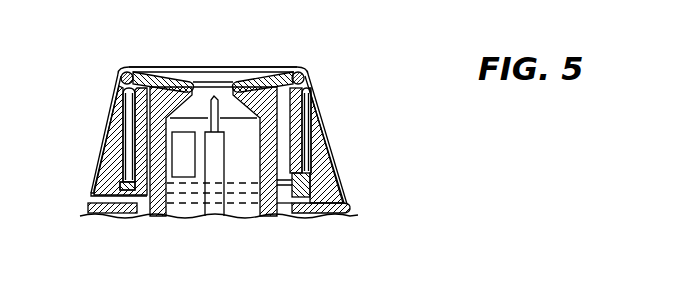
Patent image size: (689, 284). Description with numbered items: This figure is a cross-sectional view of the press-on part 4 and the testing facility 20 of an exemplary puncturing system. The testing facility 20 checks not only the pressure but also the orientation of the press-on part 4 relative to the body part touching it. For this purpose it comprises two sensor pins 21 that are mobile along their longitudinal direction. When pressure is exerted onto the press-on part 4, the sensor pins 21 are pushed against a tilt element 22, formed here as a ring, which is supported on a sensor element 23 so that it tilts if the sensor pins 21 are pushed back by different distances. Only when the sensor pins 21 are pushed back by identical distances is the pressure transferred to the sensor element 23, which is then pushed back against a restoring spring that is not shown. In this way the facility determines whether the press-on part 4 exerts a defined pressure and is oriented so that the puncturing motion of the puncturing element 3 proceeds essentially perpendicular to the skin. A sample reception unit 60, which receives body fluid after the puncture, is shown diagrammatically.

The puncturing element 3 is at (213, 106).
The press-on part 4 is at (156, 68).
The testing facility 20 is at (128, 219).
The sensor pins 21 is at (125, 120).
The tilt element 22 is at (300, 183).
The sensor element 23 is at (285, 214).
The sample reception unit 60 is at (172, 144).